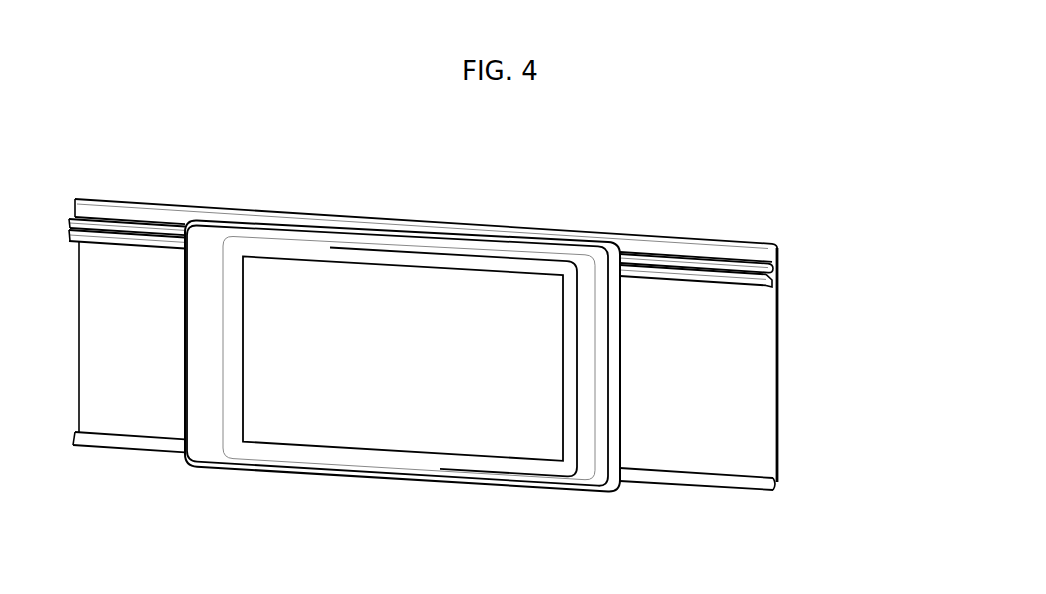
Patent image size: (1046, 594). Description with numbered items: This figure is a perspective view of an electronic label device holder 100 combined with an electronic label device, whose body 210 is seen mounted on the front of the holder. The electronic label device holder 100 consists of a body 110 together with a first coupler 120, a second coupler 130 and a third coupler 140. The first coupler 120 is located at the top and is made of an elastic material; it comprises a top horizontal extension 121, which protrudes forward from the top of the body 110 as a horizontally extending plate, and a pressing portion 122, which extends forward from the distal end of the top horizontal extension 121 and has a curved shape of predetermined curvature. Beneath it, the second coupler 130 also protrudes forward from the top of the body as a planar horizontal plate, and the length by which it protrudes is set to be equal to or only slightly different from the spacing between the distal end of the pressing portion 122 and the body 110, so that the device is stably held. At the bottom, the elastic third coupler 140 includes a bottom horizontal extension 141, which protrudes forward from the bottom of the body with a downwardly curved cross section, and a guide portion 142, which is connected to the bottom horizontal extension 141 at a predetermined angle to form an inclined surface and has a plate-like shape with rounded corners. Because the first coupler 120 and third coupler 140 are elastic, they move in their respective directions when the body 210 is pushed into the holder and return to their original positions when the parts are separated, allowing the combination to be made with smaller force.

The electronic label device holder 100 is at (742, 222).
The body 110 is at (778, 363).
The first coupler 120 is at (872, 217).
The top horizontal extension 121 is at (778, 245).
The pressing portion 122 is at (771, 268).
The second coupler 130 is at (775, 283).
The third coupler 140 is at (872, 478).
The bottom horizontal extension 141 is at (775, 482).
The guide portion 142 is at (773, 489).
The body 210 is at (390, 247).